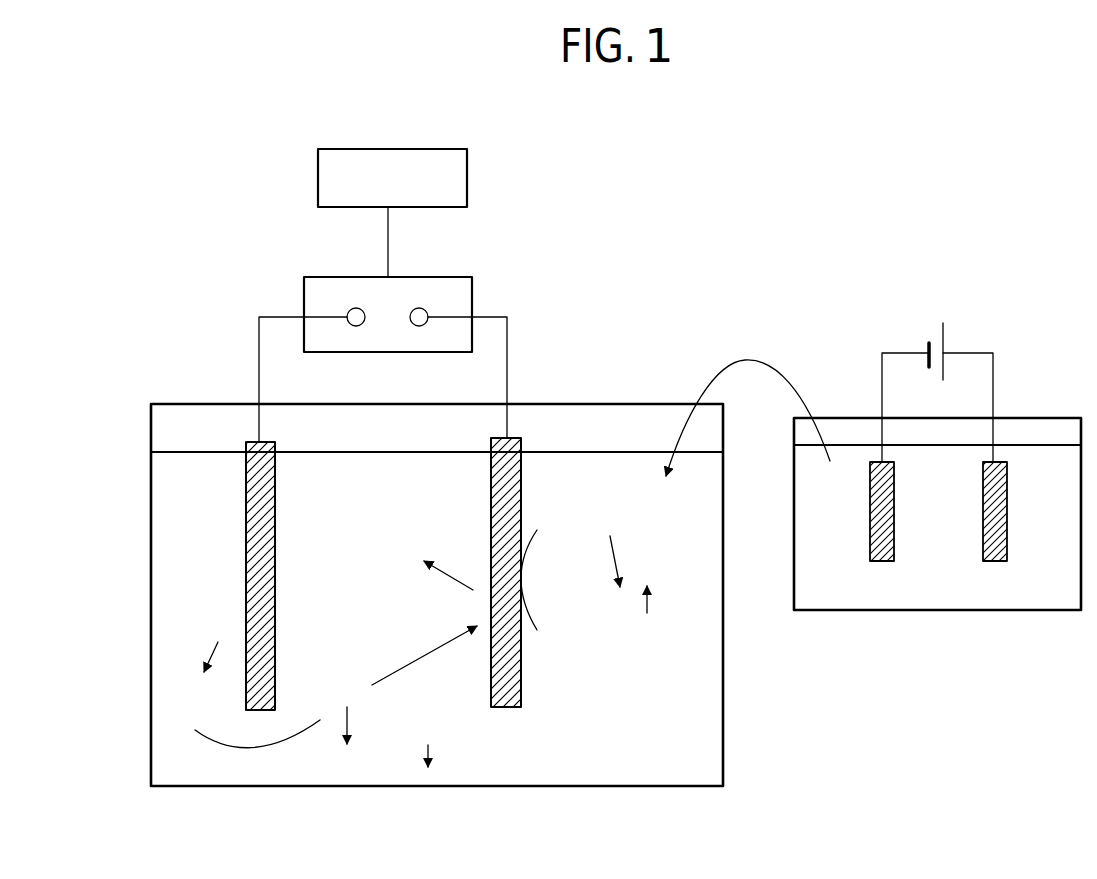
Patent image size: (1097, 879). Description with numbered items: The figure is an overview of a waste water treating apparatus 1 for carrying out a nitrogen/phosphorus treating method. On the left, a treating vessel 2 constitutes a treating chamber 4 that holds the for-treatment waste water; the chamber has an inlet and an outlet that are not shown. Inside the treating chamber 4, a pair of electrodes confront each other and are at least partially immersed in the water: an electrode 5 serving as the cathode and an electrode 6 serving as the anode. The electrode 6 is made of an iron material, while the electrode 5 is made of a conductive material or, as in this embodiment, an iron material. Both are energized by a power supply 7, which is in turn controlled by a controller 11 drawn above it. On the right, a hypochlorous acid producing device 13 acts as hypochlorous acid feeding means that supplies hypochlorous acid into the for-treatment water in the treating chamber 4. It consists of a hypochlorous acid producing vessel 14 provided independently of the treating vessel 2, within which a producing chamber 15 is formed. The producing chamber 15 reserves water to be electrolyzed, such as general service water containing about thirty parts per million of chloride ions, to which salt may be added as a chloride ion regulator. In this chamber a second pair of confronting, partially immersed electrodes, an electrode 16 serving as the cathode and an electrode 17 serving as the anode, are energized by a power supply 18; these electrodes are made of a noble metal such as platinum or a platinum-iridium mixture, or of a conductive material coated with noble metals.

The waste water treating apparatus 1 is at (276, 196).
The treating vessel 2 is at (150, 513).
The treating chamber 4 is at (373, 509).
The electrode 5 is at (507, 707).
The electrode 6 is at (259, 710).
The power supply 7 is at (303, 291).
The controller 11 is at (467, 181).
The hypochlorous acid producing device 13 is at (837, 352).
The hypochlorous acid producing vessel 14 is at (793, 562).
The producing chamber 15 is at (930, 521).
The electrode 16 is at (882, 561).
The electrode 17 is at (995, 561).
The power supply 18 is at (945, 337).